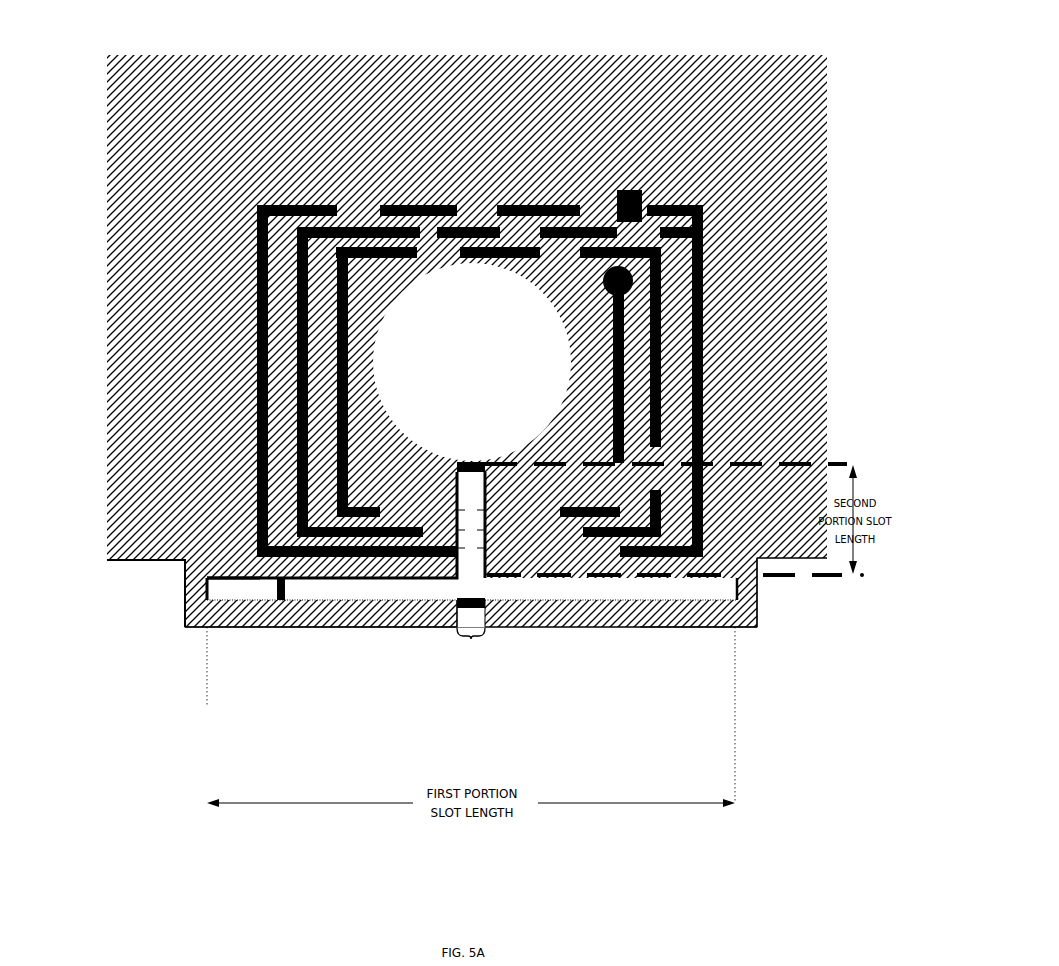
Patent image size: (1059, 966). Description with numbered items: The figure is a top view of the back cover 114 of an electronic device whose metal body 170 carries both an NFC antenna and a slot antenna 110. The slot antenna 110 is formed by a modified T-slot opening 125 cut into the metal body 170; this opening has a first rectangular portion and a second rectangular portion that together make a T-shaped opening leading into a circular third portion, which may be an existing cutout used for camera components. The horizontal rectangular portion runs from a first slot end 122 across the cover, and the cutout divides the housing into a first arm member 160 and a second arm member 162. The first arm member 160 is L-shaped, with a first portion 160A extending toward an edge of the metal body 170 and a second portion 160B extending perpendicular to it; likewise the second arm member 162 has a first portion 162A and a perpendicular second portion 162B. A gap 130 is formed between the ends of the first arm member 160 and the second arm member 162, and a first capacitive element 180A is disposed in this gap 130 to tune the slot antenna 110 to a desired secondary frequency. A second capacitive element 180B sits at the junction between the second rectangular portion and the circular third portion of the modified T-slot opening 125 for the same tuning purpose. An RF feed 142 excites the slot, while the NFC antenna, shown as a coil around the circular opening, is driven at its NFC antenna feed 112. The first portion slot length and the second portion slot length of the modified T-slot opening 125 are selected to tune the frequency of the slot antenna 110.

The slot antenna 110 is at (406, 198).
The NFC antenna feed 112 is at (634, 193).
The back cover 114 is at (110, 184).
The first slot end 122 is at (204, 585).
The modified T-slot opening 125 is at (487, 493).
The gap 130 is at (470, 629).
The RF feed 142 is at (275, 612).
The first arm member 160 is at (368, 615).
The first portion of first arm member 160A is at (177, 608).
The second portion of first arm member 160B is at (242, 613).
The second arm member 162 is at (576, 618).
The first portion of second arm member 162A is at (741, 587).
The second portion of second arm member 162B is at (719, 619).
The metal body 170 is at (150, 278).
The first capacitive element 180A is at (478, 613).
The second capacitive element 180B is at (455, 467).